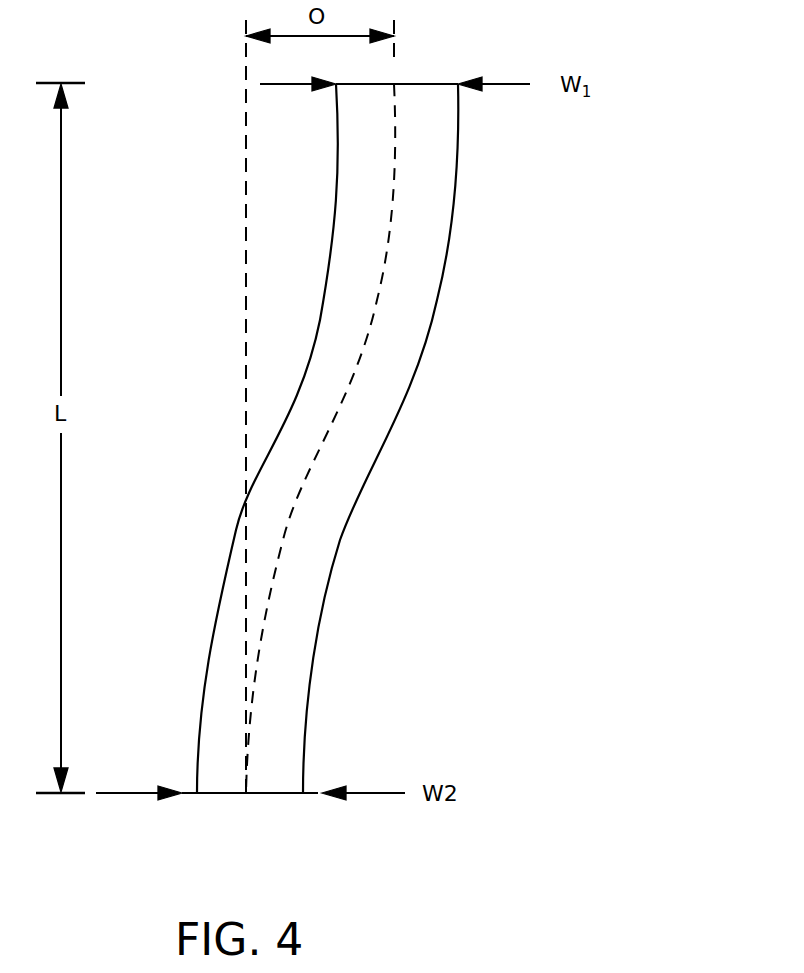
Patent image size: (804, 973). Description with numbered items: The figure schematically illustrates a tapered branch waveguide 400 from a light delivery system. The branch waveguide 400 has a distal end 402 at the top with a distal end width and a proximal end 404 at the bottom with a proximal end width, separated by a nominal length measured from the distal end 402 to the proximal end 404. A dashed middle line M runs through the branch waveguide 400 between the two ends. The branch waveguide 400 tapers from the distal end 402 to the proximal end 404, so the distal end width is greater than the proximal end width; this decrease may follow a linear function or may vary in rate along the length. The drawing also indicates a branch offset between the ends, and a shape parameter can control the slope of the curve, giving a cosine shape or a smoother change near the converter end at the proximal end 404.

The branch waveguide 400 is at (450, 228).
The distal end 402 is at (420, 84).
The proximal end 404 is at (267, 793).
The middle line M is at (343, 408).